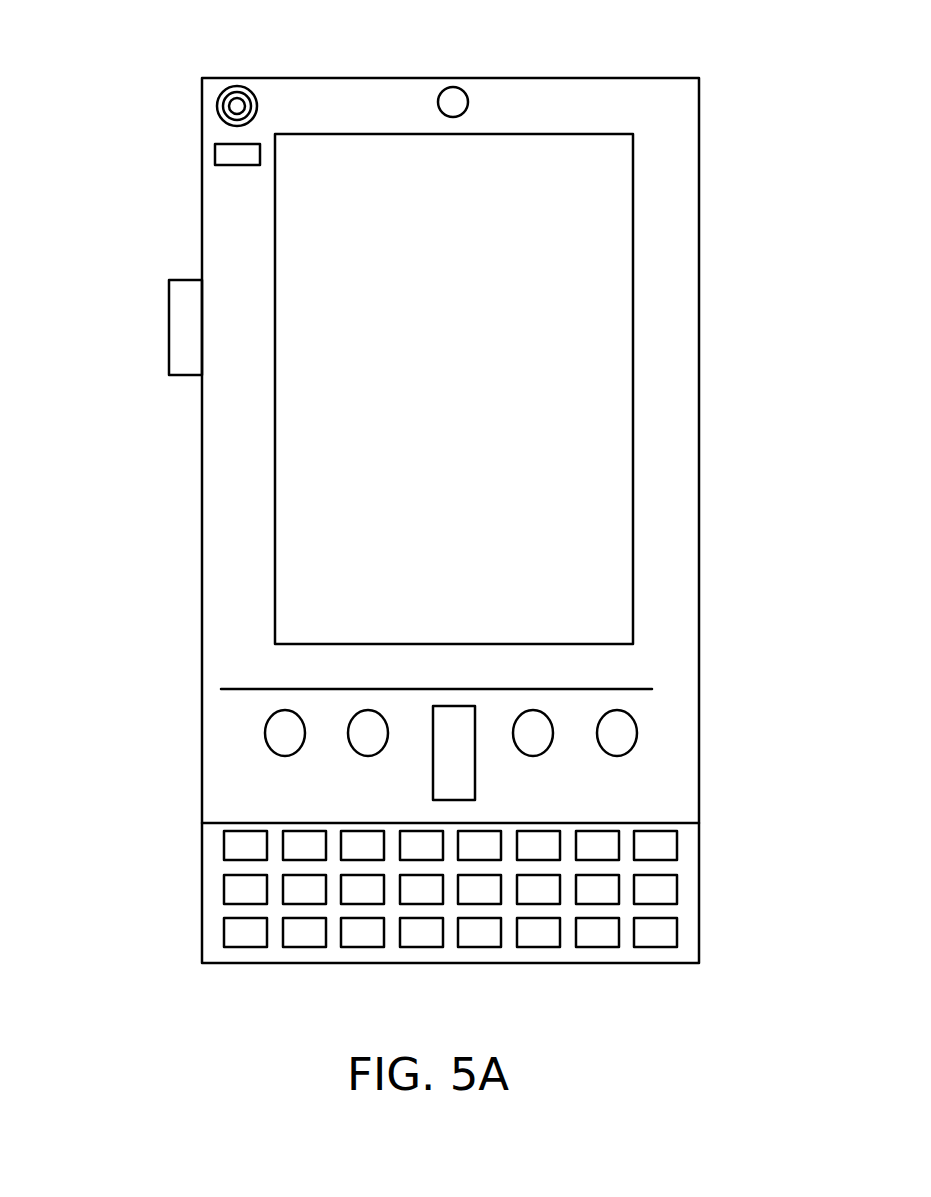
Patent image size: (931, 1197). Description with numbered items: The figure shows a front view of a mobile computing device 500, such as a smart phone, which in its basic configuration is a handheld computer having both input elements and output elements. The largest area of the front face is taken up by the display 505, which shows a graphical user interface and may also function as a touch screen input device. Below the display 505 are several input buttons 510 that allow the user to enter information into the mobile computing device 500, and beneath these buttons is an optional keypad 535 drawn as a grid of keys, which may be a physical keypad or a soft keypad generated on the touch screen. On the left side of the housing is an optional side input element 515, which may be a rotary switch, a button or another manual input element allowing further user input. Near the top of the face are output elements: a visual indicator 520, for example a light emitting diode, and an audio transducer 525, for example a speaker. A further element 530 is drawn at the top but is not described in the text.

The mobile computing device 500 is at (686, 97).
The display 505 is at (385, 557).
The input buttons 510 is at (453, 760).
The side input element 515 is at (168, 330).
The visual indicator 520 is at (216, 157).
The audio transducer 525 is at (216, 105).
The speaker 530 is at (466, 100).
The keypad 535 is at (210, 937).